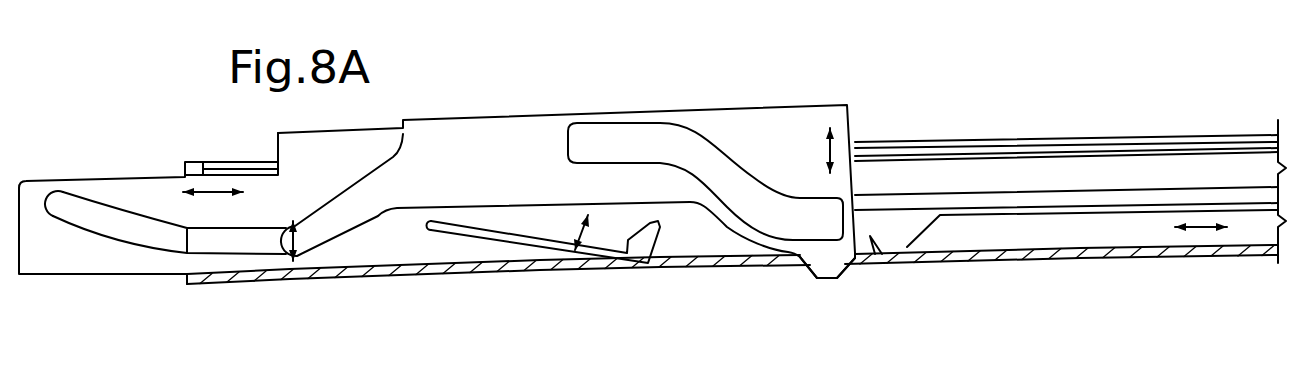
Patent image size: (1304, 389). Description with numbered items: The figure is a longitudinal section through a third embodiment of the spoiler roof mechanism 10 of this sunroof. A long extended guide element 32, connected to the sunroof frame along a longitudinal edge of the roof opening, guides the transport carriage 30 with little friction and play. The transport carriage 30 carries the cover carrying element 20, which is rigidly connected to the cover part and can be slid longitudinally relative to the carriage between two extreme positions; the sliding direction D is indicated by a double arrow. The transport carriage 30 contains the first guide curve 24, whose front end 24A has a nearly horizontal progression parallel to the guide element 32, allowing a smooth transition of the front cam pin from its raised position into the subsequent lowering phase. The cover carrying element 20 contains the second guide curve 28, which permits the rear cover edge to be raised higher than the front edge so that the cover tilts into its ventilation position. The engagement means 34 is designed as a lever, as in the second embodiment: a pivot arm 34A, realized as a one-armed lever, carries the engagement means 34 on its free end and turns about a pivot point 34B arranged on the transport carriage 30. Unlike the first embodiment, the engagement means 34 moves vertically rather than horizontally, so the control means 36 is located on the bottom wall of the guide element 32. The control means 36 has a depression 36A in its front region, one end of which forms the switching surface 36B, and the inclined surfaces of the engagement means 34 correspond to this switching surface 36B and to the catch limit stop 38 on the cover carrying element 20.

The locking device 10 is at (996, 39).
The cover carrying element 20 is at (805, 123).
The first guide curve 24 is at (165, 228).
The front end of the first guide curve 24A is at (62, 214).
The second guide curve 28 is at (625, 137).
The transport carriage 30 is at (107, 265).
The guide element 32 is at (1113, 135).
The engagement means 34 is at (548, 273).
The pivot arm 34A is at (535, 243).
The pivot point 34B is at (432, 228).
The control means 36 is at (1070, 201).
The depression 36A is at (880, 253).
The switching surface 36B is at (907, 215).
The catch limit stop 38 is at (842, 274).
The displacement direction D is at (1202, 228).